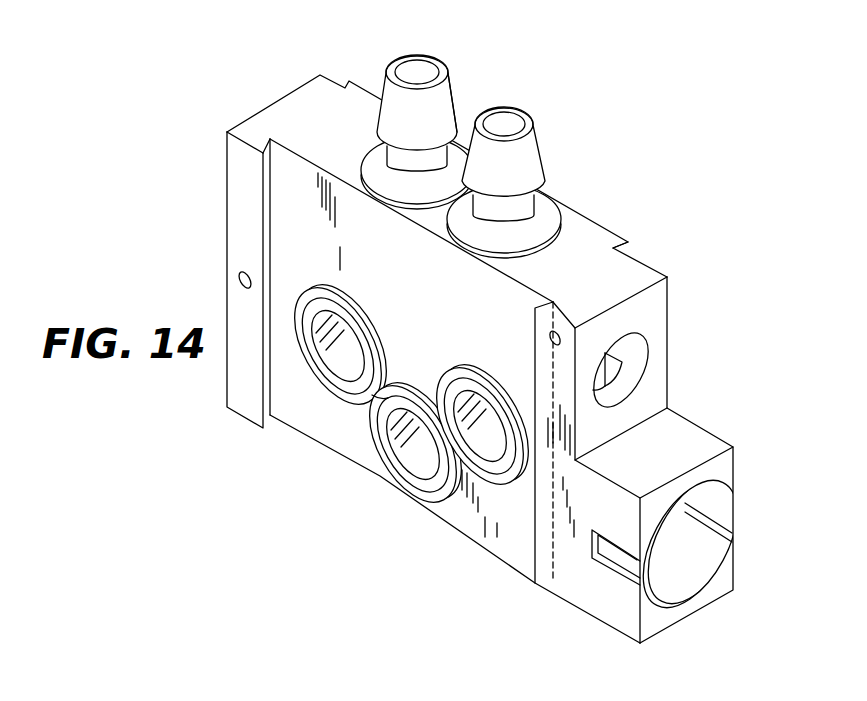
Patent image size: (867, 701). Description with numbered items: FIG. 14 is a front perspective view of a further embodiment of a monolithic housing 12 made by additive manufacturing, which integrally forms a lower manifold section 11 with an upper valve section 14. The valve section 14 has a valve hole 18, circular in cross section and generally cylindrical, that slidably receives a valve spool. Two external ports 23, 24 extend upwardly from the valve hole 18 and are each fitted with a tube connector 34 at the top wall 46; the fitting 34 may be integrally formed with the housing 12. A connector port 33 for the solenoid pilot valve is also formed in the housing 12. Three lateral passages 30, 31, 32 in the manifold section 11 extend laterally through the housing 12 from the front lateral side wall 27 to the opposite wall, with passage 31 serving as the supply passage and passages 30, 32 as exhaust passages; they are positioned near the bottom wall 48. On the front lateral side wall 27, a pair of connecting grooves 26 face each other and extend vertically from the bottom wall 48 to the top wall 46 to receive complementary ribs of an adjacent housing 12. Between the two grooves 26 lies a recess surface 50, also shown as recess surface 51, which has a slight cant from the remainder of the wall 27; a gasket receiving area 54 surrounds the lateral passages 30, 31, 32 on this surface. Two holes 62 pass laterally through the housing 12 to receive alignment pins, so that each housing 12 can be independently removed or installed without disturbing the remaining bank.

The manifold section 11 is at (462, 510).
The housing 12 is at (570, 112).
The valve section 14 is at (638, 260).
The valve hole 18 is at (640, 351).
The external port 23 is at (506, 118).
The external port 24 is at (421, 66).
The groove 26 is at (273, 398).
The lateral side wall 27 is at (233, 236).
The lateral passage 30 is at (346, 362).
The lateral passage 31 is at (405, 440).
The lateral passage 32 is at (498, 448).
The connector port 33 is at (703, 548).
The tube connector 34 is at (473, 113).
The top wall 46 is at (589, 250).
The bottom wall 48 is at (428, 507).
The recess surface 50 is at (461, 338).
The recess surface 51 is at (312, 198).
The gasket receiving area 54 is at (389, 384).
The hole 62 is at (237, 280).